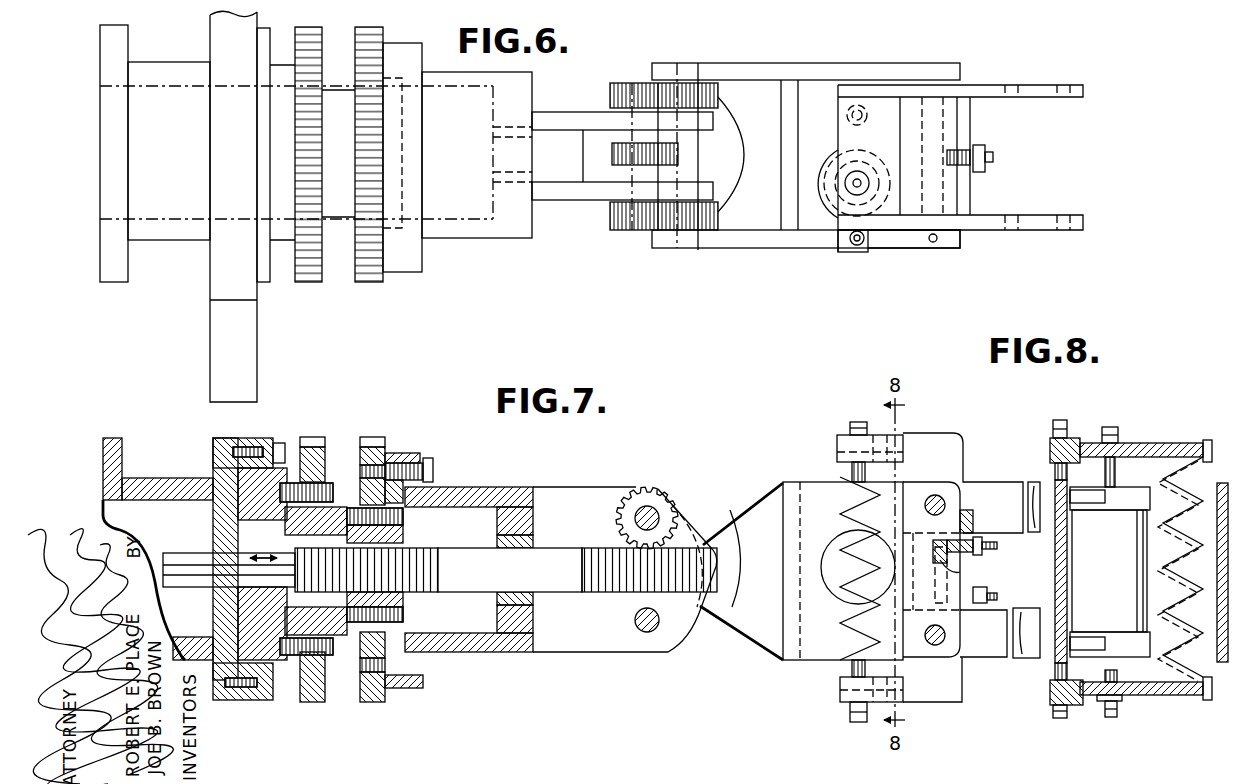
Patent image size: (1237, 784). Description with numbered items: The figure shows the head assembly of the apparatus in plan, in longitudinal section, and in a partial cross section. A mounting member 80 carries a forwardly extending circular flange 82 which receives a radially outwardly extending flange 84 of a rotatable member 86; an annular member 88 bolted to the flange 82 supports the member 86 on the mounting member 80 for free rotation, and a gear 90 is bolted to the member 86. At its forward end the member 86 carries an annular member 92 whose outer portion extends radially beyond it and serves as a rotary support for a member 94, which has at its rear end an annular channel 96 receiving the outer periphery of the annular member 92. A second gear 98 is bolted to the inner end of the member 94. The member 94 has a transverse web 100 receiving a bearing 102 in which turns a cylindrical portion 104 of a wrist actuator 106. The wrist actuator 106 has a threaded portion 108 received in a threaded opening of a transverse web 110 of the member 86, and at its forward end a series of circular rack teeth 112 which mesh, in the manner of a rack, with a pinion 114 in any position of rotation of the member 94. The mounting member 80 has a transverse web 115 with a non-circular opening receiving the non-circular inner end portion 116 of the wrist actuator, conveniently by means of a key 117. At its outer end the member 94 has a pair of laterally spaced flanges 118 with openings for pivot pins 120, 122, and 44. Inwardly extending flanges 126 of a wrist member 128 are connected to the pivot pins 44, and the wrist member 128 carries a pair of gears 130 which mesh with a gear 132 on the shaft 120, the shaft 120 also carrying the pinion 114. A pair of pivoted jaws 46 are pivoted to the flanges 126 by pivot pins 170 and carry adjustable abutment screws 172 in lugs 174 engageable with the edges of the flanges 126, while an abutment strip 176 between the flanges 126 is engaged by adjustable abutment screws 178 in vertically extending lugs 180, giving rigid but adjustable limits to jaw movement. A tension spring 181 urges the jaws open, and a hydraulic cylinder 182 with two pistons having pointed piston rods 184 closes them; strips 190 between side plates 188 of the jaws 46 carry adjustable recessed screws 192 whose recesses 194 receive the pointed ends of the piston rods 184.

In FIG. 6, the pivot pin 44 is at (698, 270).
In FIG. 7, the pivot pin 44 is at (626, 583).
In FIG. 7, the pivoted jaws 46 is at (971, 552).
In FIG. 6, the mounting member 80 is at (155, 153).
In FIG. 7, the mounting member 80 is at (158, 549).
In FIG. 7, the circular flange 82 is at (251, 712).
In FIG. 7, the radially outwardly extending flange 84 is at (243, 699).
In FIG. 6, the rotatable member 86 is at (338, 172).
In FIG. 7, the rotatable member 86 is at (227, 559).
In FIG. 7, the annular member 88 is at (285, 607).
In FIG. 6, the gear 90 is at (311, 176).
In FIG. 7, the gear 90 is at (331, 553).
In FIG. 7, the annular member 92 is at (367, 571).
In FIG. 6, the member 94 is at (477, 175).
In FIG. 7, the member 94 is at (469, 551).
In FIG. 7, the annular channel 96 is at (451, 667).
In FIG. 6, the second gear 98 is at (369, 174).
In FIG. 7, the second gear 98 is at (396, 564).
In FIG. 7, the transverse web 100 is at (561, 510).
In FIG. 7, the bearing 102 is at (543, 565).
In FIG. 7, the cylindrical portion 104 is at (510, 570).
In FIG. 7, the wrist actuator 106 is at (460, 529).
In FIG. 7, the threaded portion 108 is at (344, 562).
In FIG. 7, the transverse web 110 is at (391, 565).
In FIG. 7, the circular rack teeth 112 is at (628, 590).
In FIG. 6, the pinion 114 is at (626, 150).
In FIG. 7, the pinion 114 is at (646, 494).
In FIG. 7, the transverse web 115 is at (183, 626).
In FIG. 7, the inner end portion 116 is at (229, 583).
In FIG. 7, the key 117 is at (262, 600).
In FIG. 6, the laterally spaced flanges 118 is at (622, 157).
In FIG. 6, the pivot pin 120 is at (637, 156).
In FIG. 7, the pivot pin 120 is at (673, 490).
In FIG. 7, the pivot pin 122 is at (645, 652).
In FIG. 6, the inwardly extending flanges 126 is at (806, 161).
In FIG. 6, the wrist member 128 is at (960, 141).
In FIG. 7, the wrist member 128 is at (836, 545).
In FIG. 8, the wrist member 128 is at (1139, 588).
In FIG. 6, the gears 130 is at (740, 154).
In FIG. 7, the gears 130 is at (741, 563).
In FIG. 6, the gear 132 is at (658, 156).
In FIG. 7, the pivot pins 170 is at (932, 548).
In FIG. 6, the adjustable abutment screws 172 is at (862, 268).
In FIG. 7, the adjustable abutment screws 172 is at (850, 557).
In FIG. 8, the adjustable abutment screws 172 is at (1035, 579).
In FIG. 6, the lugs 174 is at (914, 260).
In FIG. 8, the lugs 174 is at (1042, 439).
In FIG. 7, the abutment strip 176 is at (937, 564).
In FIG. 6, the adjustable abutment screws 178 is at (997, 158).
In FIG. 7, the adjustable abutment screws 178 is at (1009, 584).
In FIG. 7, the vertically extending lugs 180 is at (1003, 537).
In FIG. 6, the tension spring 181 is at (833, 112).
In FIG. 6, the hydraulic cylinder 182 is at (842, 230).
In FIG. 8, the hydraulic cylinder 182 is at (1110, 572).
In FIG. 8, the piston rod 184 is at (1127, 457).
In FIG. 8, the side plates 188 is at (1193, 591).
In FIG. 7, the strips 190 is at (933, 572).
In FIG. 8, the strips 190 is at (1146, 562).
In FIG. 8, the adjustable recessed screws 192 is at (1073, 563).
In FIG. 8, the recesses 194 is at (1131, 689).